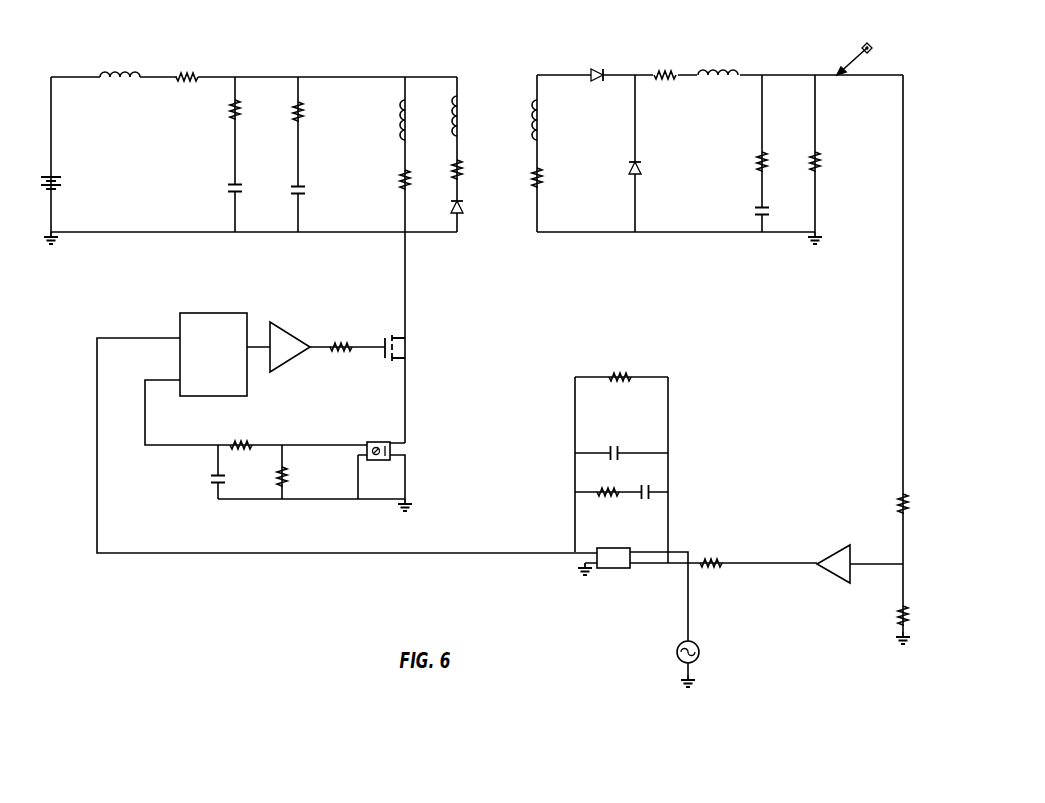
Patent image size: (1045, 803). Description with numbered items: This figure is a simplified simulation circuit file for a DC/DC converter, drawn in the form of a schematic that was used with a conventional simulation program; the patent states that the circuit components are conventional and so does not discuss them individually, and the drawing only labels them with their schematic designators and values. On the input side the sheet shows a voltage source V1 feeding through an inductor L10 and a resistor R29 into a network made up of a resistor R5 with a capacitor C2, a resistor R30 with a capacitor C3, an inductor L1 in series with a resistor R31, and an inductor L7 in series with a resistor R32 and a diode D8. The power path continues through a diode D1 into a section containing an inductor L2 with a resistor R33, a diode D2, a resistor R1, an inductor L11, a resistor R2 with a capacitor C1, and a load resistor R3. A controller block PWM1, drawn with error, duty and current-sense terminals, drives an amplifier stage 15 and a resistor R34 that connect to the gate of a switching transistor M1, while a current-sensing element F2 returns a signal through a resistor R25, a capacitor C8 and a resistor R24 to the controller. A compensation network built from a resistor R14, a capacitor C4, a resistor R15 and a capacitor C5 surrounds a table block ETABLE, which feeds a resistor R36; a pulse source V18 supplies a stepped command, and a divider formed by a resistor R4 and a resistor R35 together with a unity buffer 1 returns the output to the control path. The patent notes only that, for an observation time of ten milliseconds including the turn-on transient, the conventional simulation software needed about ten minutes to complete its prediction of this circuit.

The input voltage source 28V V1 is at (66, 155).
The inductor 385uH L10 is at (122, 46).
The resistor 10m R29 is at (187, 48).
The resistor 2.61 R5 is at (215, 119).
The capacitor 60u C2 is at (216, 186).
The resistor 10m R30 is at (317, 112).
The capacitor 60u C3 is at (314, 191).
The inductor 415u L1 is at (380, 120).
The resistor 10m R31 is at (385, 183).
The inductor 415u L7 is at (477, 119).
The resistor 10m R32 is at (476, 171).
The diode D8 is at (470, 212).
The diode MBR350 D1 is at (592, 49).
The inductor 165u L2 is at (557, 120).
The resistor 10m R33 is at (559, 183).
The diode D2 is at (647, 174).
The resistor 5m R1 is at (666, 75).
The inductor 102uH L11 is at (718, 74).
The resistor 0.01 R2 is at (743, 147).
The capacitor 100u C1 is at (740, 201).
The load resistor 2.12 R3 is at (836, 162).
The PWM controller (error, duty, isense) PWM1 is at (213, 339).
The gain 15 amplifier 15 is at (290, 347).
The gate resistor 10 R34 is at (340, 322).
The MOSFET IRF230 M1 is at (429, 346).
The current sensor gain 0.02 F2 is at (436, 437).
The resistor 50 R25 is at (243, 447).
The capacitor 560P C8 is at (198, 479).
The resistor 36.5 R24 is at (302, 474).
The resistor 100M R14 is at (620, 350).
The capacitor 560P C4 is at (616, 429).
The resistor 24.3K R15 is at (608, 491).
The capacitor 2200P C5 is at (681, 481).
The error table block ETABLE is at (615, 545).
The resistor 2K R36 is at (715, 537).
The pulse voltage source V18 is at (695, 695).
The feedback resistor 11.1K R4 is at (875, 493).
The unity gain buffer 1 is at (833, 564).
The feedback resistor 9.76K R35 is at (864, 608).